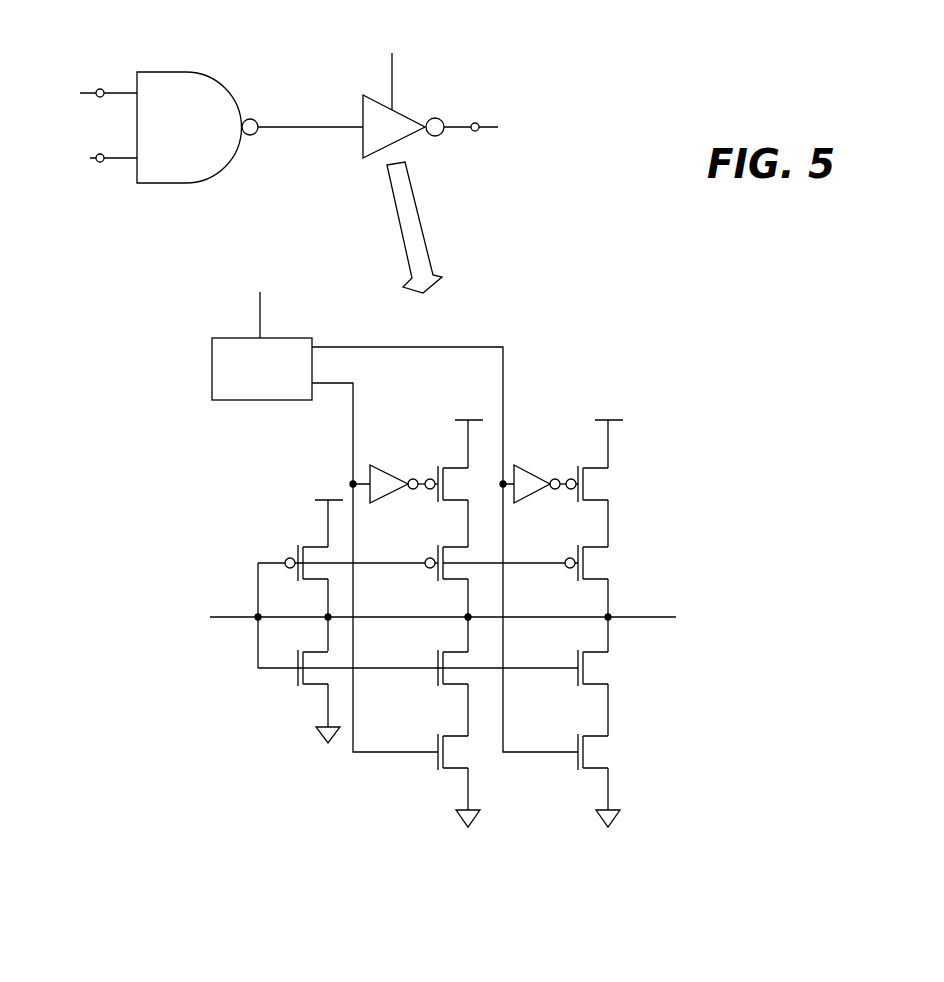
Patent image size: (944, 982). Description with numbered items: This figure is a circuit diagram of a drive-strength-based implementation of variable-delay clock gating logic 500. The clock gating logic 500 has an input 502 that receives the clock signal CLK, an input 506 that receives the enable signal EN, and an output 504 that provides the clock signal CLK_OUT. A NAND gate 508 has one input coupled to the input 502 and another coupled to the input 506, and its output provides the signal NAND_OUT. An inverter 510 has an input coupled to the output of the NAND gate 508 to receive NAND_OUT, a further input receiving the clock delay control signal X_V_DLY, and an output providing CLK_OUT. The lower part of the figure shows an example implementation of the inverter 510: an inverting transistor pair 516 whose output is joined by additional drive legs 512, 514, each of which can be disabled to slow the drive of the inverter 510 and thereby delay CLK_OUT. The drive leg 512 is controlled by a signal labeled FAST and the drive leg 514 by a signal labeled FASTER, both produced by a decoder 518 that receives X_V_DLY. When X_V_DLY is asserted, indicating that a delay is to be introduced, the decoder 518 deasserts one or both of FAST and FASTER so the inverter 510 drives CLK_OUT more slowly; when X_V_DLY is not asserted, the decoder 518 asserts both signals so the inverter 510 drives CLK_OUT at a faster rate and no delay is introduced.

The clock gating logic 500 is at (456, 60).
The input 502 is at (100, 162).
The output 504 is at (475, 132).
The input 506 is at (100, 89).
The NAND gate 508 is at (197, 127).
The inverter 510 is at (362, 150).
The drive leg 512 is at (428, 465).
The drive leg 514 is at (568, 465).
The inverting transistor pair 516 is at (248, 581).
The decoder 518 is at (262, 336).